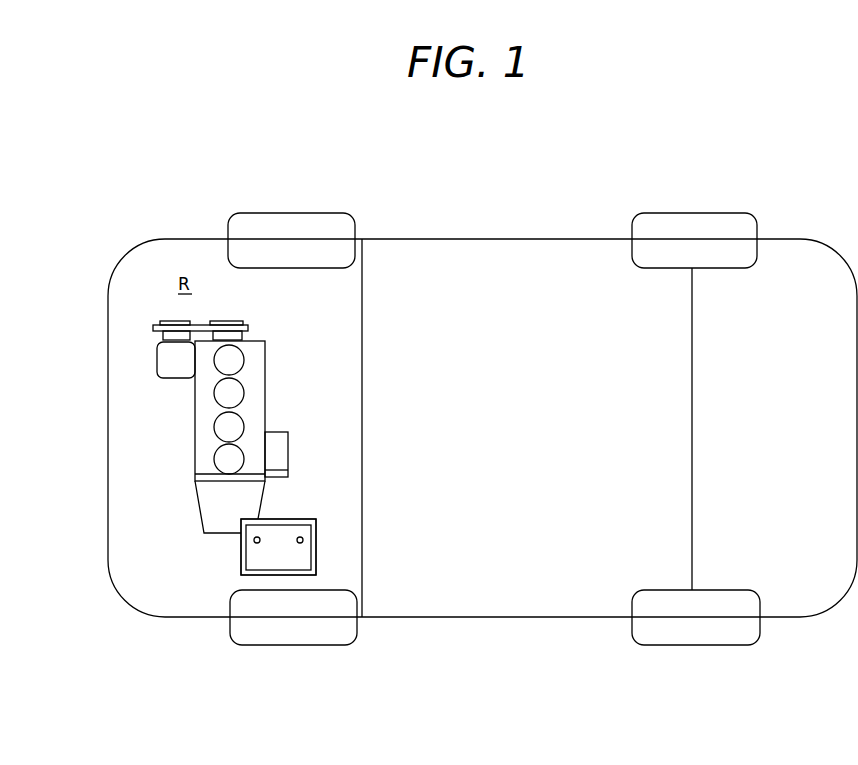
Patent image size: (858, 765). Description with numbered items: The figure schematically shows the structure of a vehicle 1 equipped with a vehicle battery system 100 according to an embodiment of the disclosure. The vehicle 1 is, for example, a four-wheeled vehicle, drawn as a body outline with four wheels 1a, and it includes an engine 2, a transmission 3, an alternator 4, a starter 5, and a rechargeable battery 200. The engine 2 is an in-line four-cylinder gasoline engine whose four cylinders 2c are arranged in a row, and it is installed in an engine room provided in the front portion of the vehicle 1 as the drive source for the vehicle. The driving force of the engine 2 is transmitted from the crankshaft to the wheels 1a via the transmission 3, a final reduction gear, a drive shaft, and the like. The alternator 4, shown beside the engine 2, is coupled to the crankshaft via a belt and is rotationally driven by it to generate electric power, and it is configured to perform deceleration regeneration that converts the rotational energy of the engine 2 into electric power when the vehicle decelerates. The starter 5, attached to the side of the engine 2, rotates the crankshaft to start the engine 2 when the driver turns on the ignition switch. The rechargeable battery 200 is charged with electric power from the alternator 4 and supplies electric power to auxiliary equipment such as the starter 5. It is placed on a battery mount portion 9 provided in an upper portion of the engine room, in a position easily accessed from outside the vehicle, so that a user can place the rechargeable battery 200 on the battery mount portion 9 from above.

The vehicle 1 is at (788, 190).
The wheels 1a is at (305, 228).
The vehicle battery system 100 is at (298, 320).
The engine 2 is at (267, 378).
The cylinders 2c is at (229, 409).
The transmission 3 is at (211, 513).
The alternator 4 is at (156, 374).
The starter 5 is at (273, 432).
The battery mount portion 9 is at (273, 519).
The rechargeable battery 200 is at (300, 560).